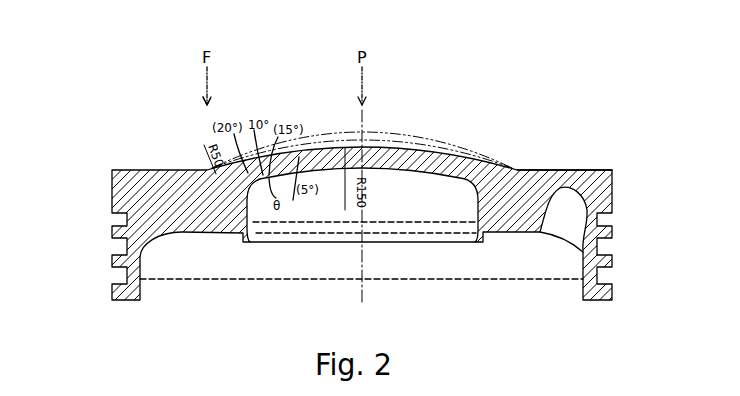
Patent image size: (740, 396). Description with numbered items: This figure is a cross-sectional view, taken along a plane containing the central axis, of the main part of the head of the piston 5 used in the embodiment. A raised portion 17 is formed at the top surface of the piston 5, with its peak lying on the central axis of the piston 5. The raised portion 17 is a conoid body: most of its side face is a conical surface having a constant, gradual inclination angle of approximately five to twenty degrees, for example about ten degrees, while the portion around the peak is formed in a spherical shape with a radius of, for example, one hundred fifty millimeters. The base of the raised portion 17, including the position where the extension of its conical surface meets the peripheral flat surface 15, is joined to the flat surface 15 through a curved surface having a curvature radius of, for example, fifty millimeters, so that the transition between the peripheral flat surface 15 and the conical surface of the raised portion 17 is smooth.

The piston 5 is at (112, 205).
The peripheral flat surface 15 is at (543, 170).
The raised portion 17 is at (398, 147).